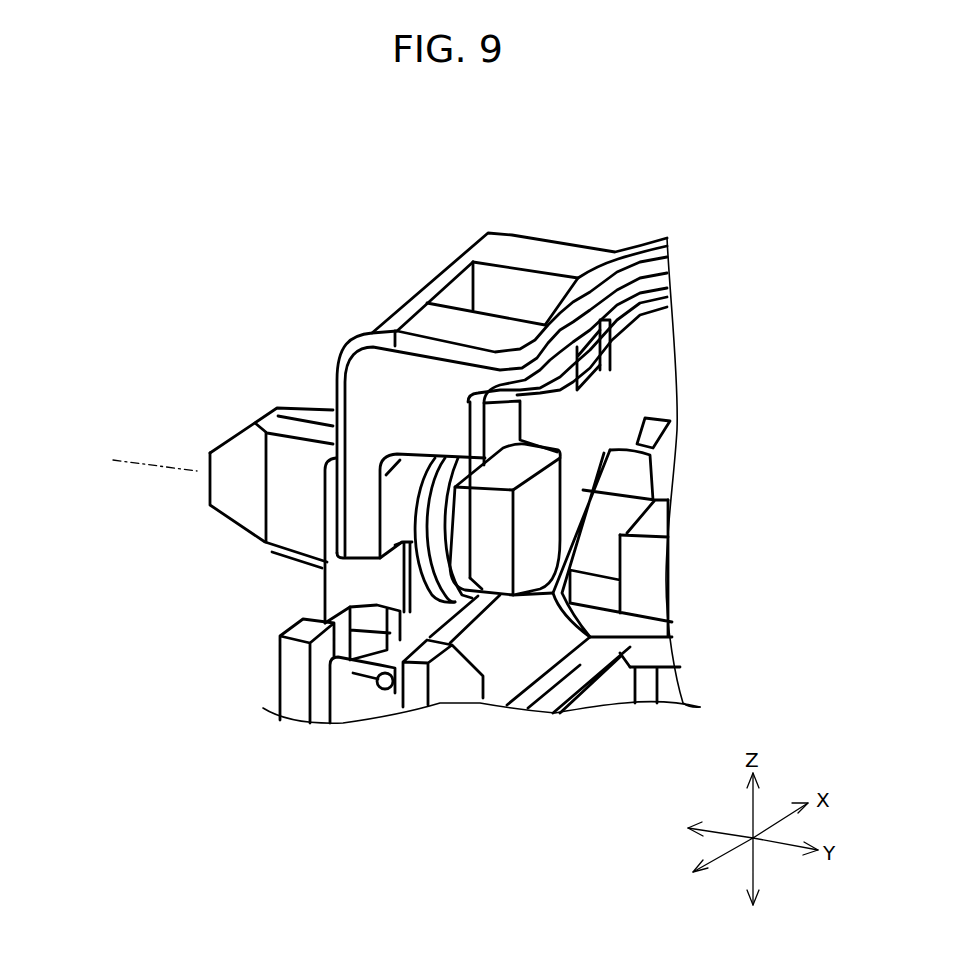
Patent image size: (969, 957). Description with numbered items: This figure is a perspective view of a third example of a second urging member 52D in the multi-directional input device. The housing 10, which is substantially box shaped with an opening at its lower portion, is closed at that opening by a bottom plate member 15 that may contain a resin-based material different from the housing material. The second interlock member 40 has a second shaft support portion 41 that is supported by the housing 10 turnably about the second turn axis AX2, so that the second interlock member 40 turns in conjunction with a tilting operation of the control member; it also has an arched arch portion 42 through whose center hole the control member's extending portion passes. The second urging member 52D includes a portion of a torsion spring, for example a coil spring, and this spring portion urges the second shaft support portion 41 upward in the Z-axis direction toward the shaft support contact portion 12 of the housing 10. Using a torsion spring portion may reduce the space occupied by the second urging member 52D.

The second interlock member 40 is at (573, 243).
The arch portion 42 is at (646, 242).
The second shaft support portion 41 is at (303, 455).
The housing 10 is at (327, 516).
The second turn axis AX2 is at (127, 455).
The shaft support contact portion 12 is at (323, 538).
The second urging member 52D is at (427, 563).
The bottom plate member 15 is at (356, 707).